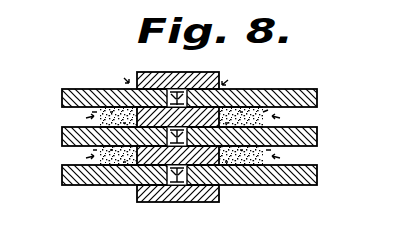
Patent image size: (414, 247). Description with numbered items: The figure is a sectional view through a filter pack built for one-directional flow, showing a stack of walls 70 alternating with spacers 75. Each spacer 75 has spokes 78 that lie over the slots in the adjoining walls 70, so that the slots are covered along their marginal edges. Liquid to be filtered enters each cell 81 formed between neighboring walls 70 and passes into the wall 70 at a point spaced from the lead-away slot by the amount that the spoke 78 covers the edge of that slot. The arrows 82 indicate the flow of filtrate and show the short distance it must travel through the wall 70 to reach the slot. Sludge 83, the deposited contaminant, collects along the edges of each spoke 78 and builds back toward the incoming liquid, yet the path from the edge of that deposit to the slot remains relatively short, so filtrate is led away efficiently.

The wall 70 is at (72, 90).
The cell 81 is at (98, 90).
The spoke 78 is at (140, 72).
The arrows 82 is at (163, 93).
The spacer 75 is at (197, 76).
The sludge 83 is at (122, 157).